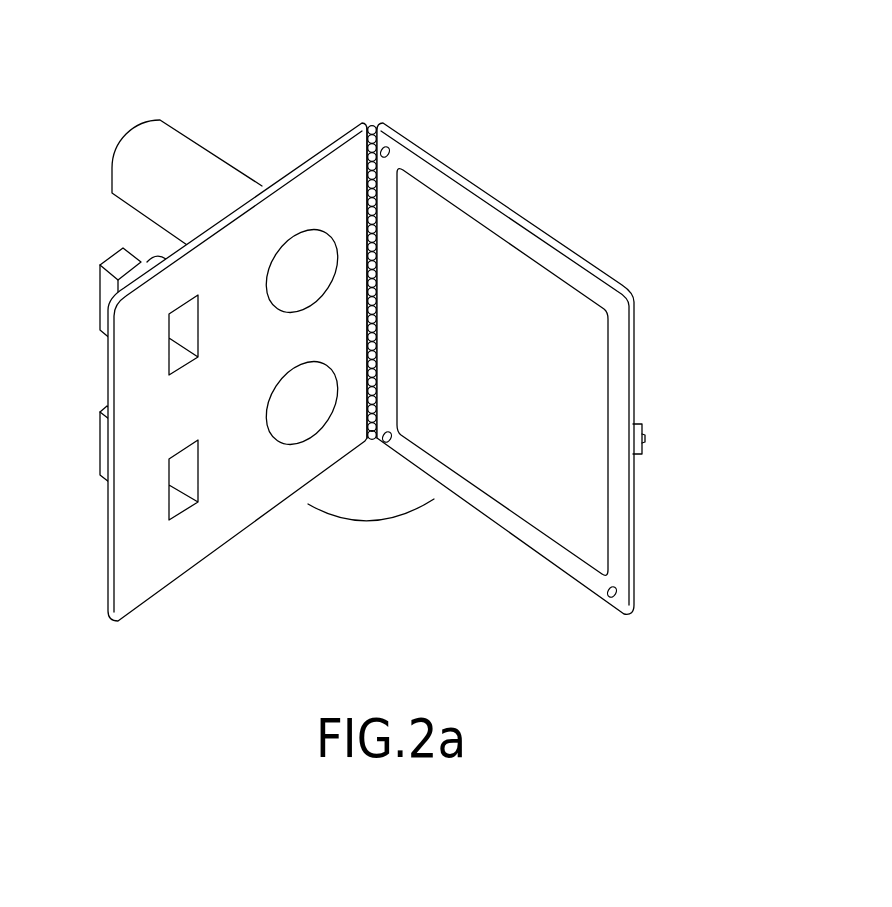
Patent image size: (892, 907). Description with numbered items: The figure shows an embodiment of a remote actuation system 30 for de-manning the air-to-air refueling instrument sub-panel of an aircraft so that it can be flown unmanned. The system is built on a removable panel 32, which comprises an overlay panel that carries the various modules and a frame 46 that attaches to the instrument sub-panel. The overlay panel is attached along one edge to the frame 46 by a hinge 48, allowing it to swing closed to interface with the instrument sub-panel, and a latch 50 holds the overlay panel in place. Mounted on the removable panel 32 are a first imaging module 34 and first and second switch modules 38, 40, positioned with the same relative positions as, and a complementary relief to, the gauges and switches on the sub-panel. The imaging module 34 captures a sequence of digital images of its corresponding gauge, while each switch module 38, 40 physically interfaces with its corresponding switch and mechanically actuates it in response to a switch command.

The remote actuation system 30 is at (452, 64).
The removable panel 32 is at (235, 560).
The first imaging module 34 is at (139, 141).
The first switch module 38 is at (104, 281).
The second switch module 40 is at (103, 434).
The frame 46 is at (590, 264).
The hinge 48 is at (374, 98).
The latch 50 is at (644, 450).